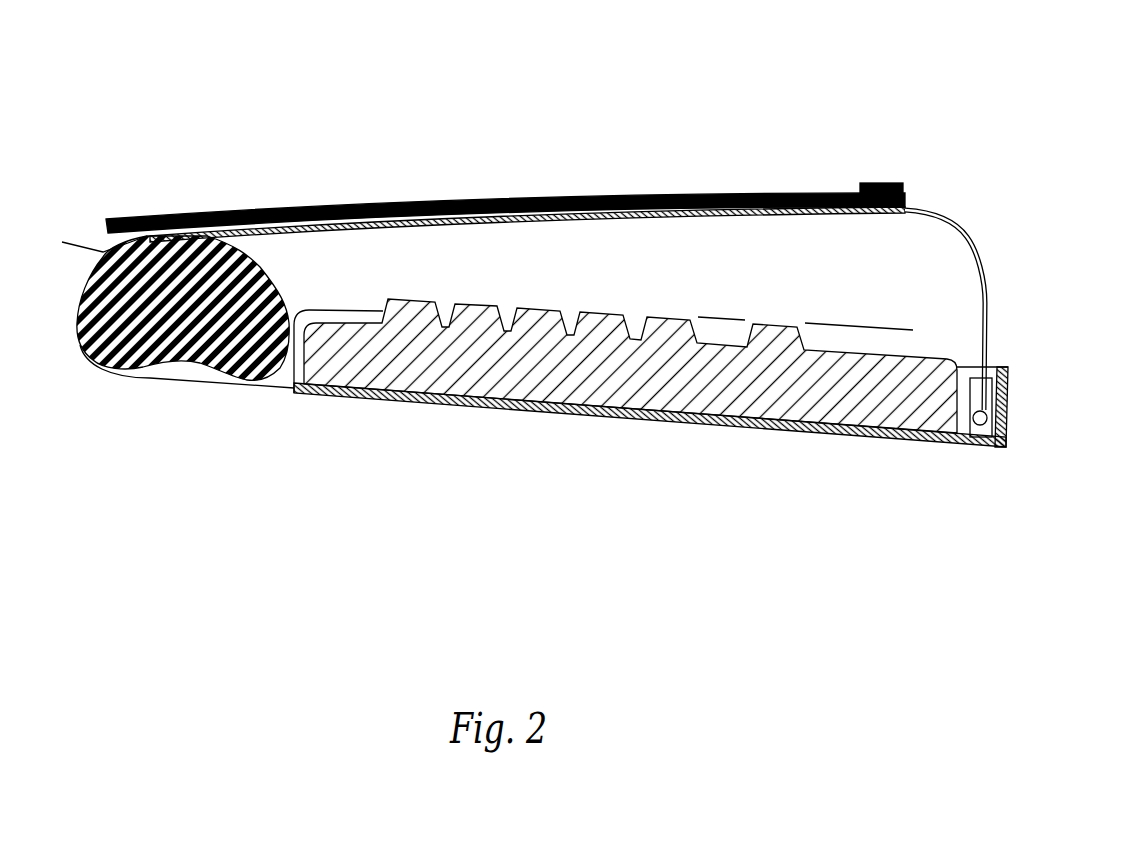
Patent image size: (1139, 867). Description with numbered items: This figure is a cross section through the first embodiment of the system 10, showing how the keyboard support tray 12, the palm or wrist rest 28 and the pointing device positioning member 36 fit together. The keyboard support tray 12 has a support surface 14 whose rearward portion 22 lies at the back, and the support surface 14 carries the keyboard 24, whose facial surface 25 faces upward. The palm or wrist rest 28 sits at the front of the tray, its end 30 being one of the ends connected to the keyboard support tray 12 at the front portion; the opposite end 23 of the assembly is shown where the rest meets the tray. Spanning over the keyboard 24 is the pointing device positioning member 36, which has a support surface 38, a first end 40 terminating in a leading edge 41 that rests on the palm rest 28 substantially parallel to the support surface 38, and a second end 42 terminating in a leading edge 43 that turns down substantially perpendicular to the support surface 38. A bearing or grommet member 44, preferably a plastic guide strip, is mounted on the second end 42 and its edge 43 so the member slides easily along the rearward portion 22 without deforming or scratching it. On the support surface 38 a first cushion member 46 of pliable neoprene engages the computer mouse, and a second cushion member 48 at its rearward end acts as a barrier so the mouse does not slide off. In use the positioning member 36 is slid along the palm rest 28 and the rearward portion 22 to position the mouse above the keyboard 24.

The system 10 is at (807, 511).
The keyboard support tray 12 is at (1000, 450).
The support surface 14 is at (585, 412).
The rearward portion 22 is at (982, 447).
The end edge 23 is at (283, 382).
The keyboard 24 is at (467, 405).
The facial surface 25 is at (851, 325).
The palm or wrist rest 28 is at (77, 337).
The end 30 is at (340, 307).
The pointing device positioning member 36 is at (963, 224).
The support surface 38 is at (457, 227).
The first end 40 is at (210, 213).
The leading edge 41 is at (62, 242).
The second end 42 is at (980, 397).
The leading edge 43 is at (987, 416).
The bearing or grommet member 44 is at (960, 447).
The first cushion member 46 is at (667, 200).
The second cushion member 48 is at (887, 185).